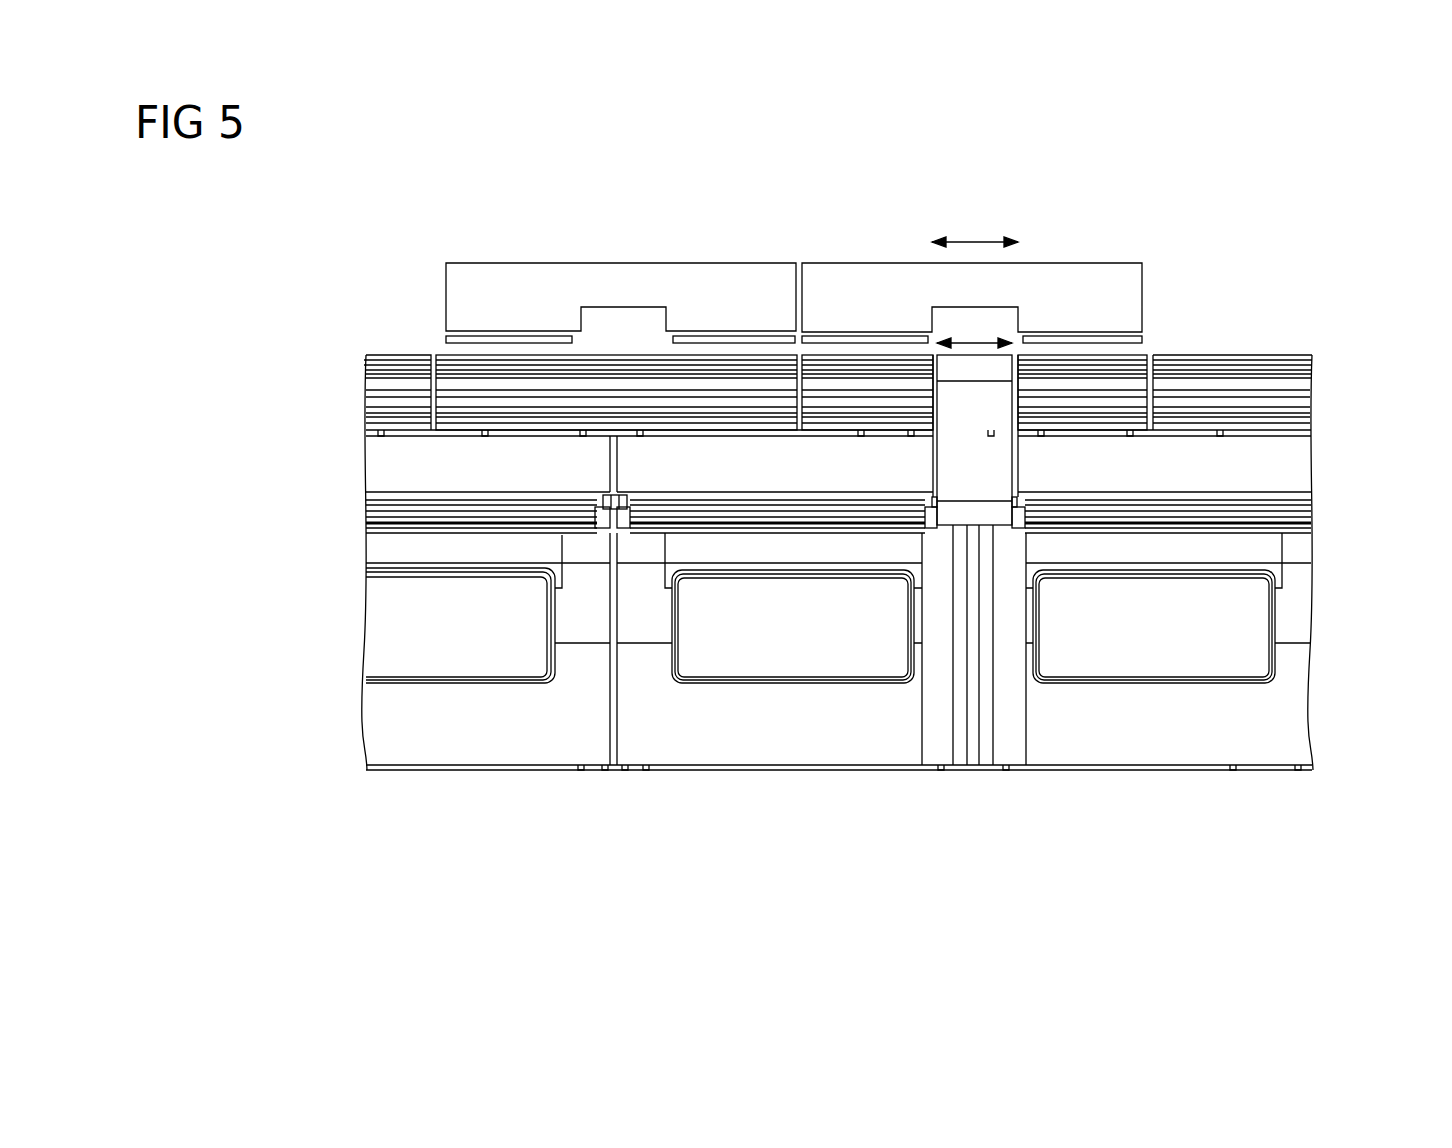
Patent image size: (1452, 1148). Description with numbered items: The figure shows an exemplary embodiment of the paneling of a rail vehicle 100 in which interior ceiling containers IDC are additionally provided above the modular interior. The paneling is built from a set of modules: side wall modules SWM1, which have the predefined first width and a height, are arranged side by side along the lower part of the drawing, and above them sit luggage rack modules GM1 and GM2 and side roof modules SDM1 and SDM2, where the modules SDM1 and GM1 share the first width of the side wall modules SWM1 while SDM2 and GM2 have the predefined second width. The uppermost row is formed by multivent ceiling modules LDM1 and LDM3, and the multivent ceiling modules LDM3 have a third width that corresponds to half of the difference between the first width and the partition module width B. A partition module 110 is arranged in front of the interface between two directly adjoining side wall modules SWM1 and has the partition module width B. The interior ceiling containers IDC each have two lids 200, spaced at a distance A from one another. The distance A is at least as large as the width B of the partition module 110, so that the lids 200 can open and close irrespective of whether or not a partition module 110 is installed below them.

The rail vehicle 100 is at (1308, 297).
The partition module 110 is at (975, 770).
The lid 200 is at (680, 333).
The interior ceiling container IDC is at (458, 290).
The multivent ceiling module LDM1 is at (512, 355).
The multivent ceiling module LDM3 is at (850, 355).
The side roof module SDM1 is at (378, 462).
The side roof module SDM2 is at (700, 450).
The luggage rack module GM1 is at (505, 498).
The luggage rack module GM2 is at (830, 498).
The side wall module SWM1 is at (510, 770).
The distance A is at (975, 225).
The partition module width B is at (974, 327).